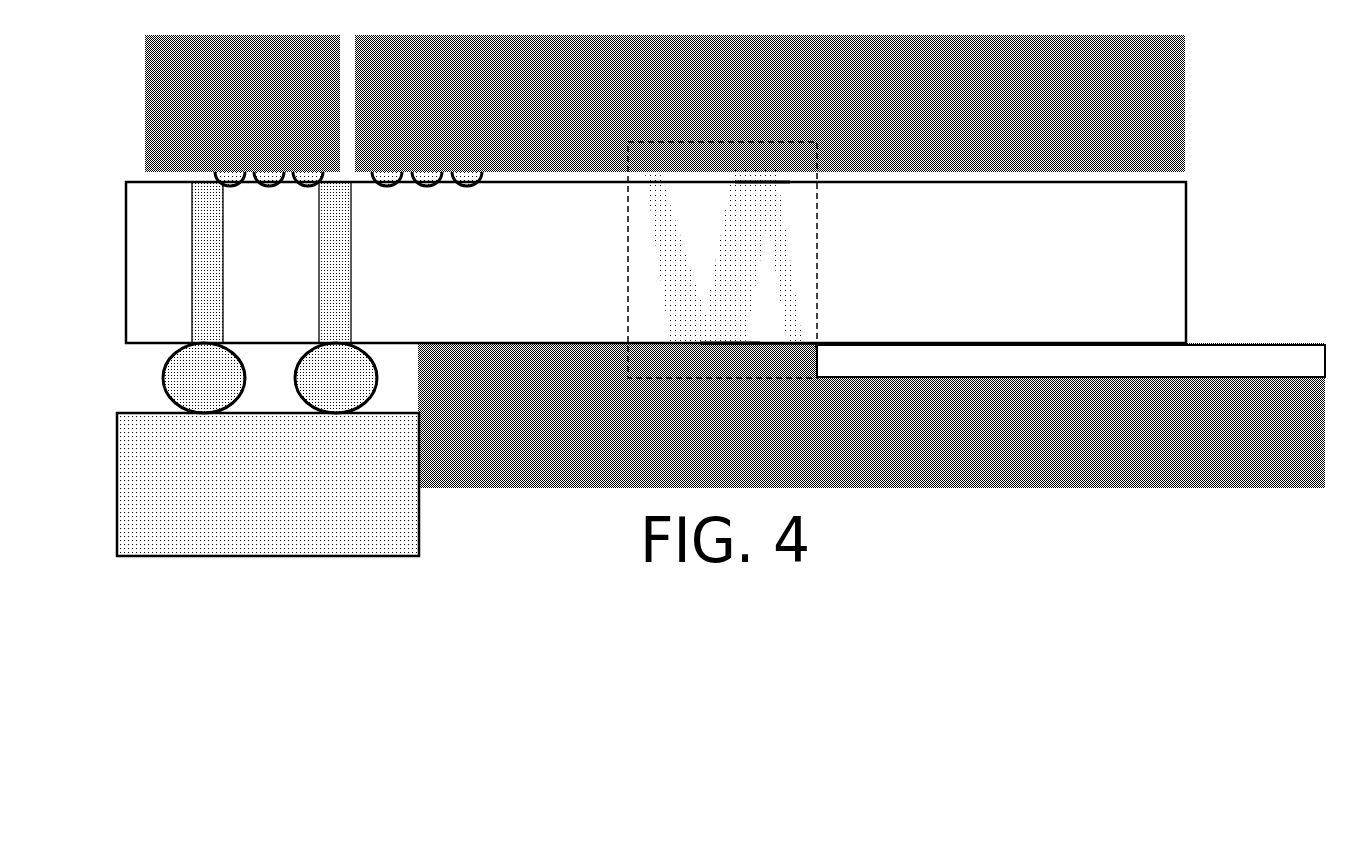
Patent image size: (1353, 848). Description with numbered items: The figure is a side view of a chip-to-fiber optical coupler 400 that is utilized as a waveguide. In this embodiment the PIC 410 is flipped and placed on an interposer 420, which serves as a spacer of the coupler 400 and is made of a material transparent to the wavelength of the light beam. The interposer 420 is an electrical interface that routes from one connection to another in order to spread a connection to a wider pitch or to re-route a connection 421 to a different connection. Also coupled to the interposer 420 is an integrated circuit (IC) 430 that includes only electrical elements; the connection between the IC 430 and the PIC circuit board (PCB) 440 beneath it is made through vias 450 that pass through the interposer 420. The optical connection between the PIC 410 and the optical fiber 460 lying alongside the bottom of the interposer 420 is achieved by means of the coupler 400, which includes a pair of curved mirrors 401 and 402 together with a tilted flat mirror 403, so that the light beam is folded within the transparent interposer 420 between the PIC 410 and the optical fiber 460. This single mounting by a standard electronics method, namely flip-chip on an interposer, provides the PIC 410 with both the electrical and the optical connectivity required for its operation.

The integrated circuit (IC) 430 is at (300, 124).
The PIC 410 is at (832, 124).
The interposer 420 is at (1100, 325).
The connection 421 is at (222, 192).
The vias 450 is at (192, 227).
The chip-to-fiber optical coupler 400 is at (632, 210).
The curved mirror 402 is at (787, 183).
The curved mirror 401 is at (740, 342).
The tilted flat mirror 403 is at (758, 361).
The optical fiber 460 is at (846, 362).
The PIC circuit board (PCB) 440 is at (240, 511).